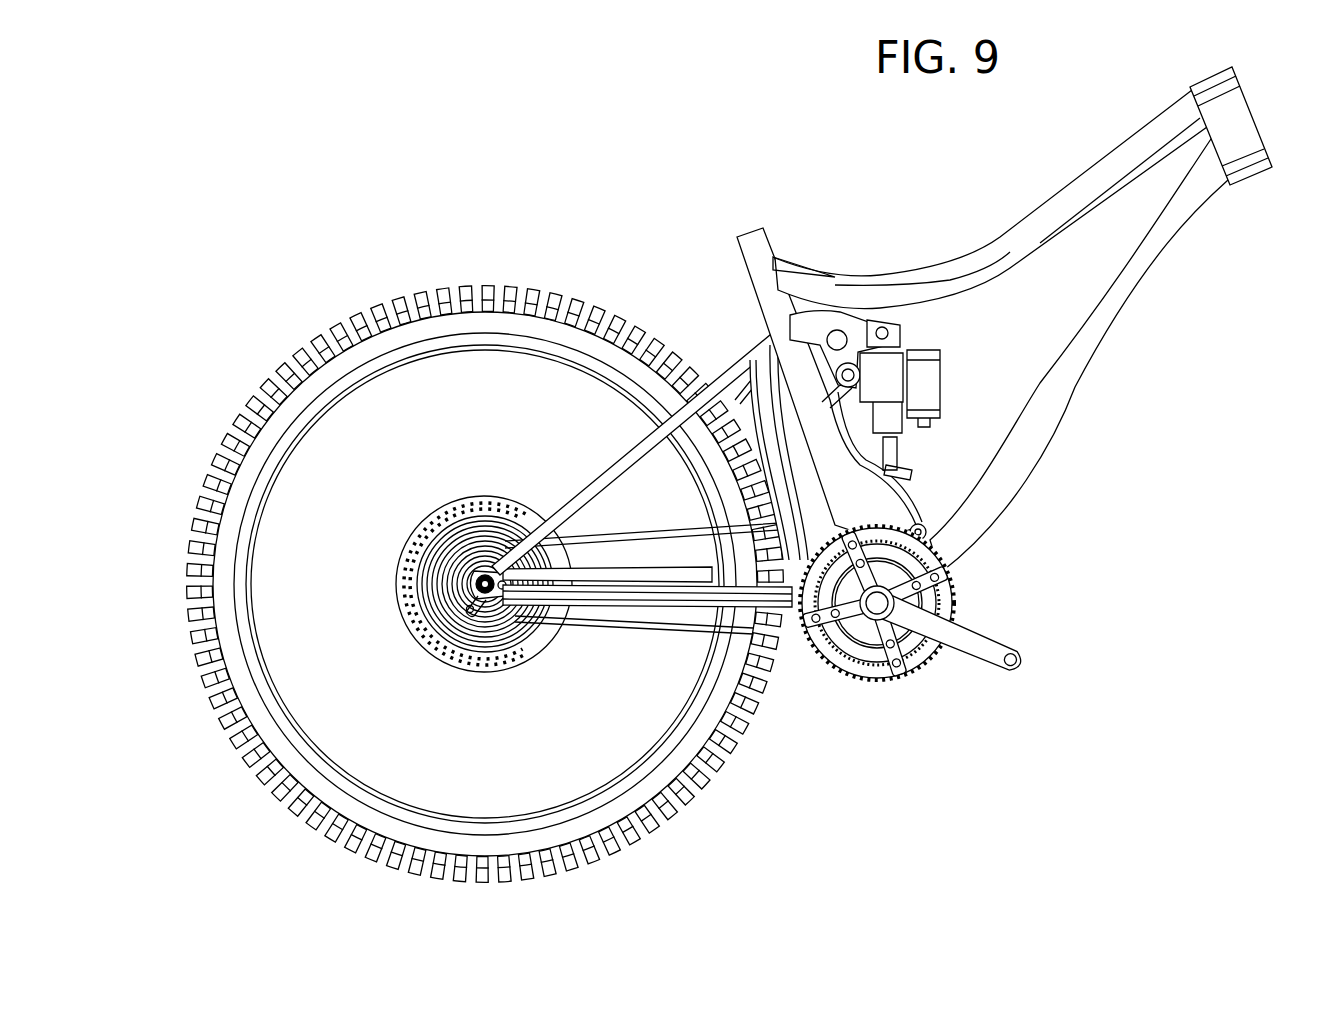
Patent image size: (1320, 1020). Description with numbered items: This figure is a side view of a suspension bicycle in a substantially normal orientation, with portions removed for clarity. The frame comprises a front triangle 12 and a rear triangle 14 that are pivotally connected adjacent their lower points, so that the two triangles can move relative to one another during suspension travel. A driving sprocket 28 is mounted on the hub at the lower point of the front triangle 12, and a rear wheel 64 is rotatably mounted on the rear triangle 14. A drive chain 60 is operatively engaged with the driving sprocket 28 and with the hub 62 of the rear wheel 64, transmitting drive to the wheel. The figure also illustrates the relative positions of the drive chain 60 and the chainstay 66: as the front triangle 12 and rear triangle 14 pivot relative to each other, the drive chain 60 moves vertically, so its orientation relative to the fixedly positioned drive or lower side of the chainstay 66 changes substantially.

The front triangle 12 is at (1045, 408).
The rear triangle 14 is at (597, 482).
The driving sprocket 28 is at (872, 667).
The drive chain 60 is at (738, 614).
The hub 62 is at (460, 517).
The rear wheel 64 is at (427, 291).
The chainstay 66 is at (614, 592).